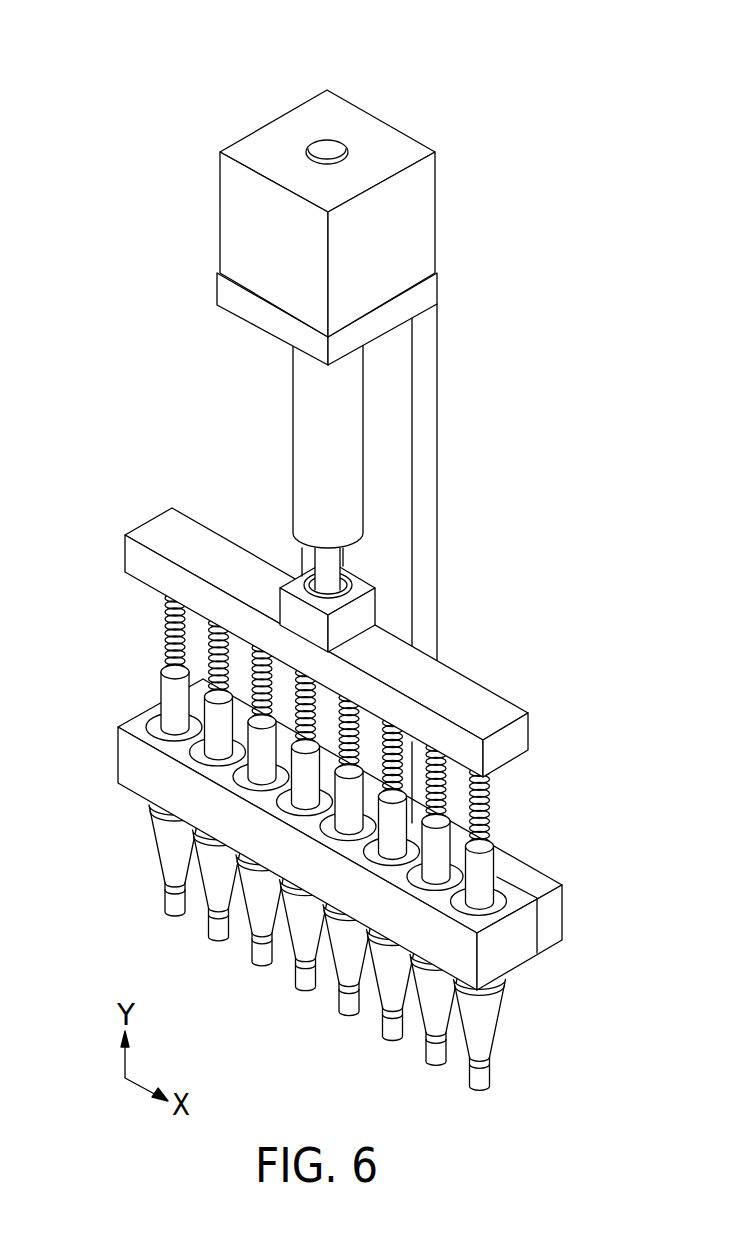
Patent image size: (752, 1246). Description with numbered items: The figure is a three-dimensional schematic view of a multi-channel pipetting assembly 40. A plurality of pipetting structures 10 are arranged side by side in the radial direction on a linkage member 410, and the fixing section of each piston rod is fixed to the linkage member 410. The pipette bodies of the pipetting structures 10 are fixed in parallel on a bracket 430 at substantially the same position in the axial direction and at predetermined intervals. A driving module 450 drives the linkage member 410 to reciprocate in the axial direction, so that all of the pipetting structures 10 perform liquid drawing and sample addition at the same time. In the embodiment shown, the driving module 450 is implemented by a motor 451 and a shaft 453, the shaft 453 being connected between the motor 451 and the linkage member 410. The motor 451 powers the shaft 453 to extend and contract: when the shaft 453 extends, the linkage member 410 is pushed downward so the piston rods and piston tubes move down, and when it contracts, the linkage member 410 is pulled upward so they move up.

The multi-channel pipetting assembly 40 is at (58, 78).
The pipetting structure 10 is at (162, 836).
The linkage member 410 is at (128, 560).
The bracket 430 is at (437, 386).
The driving module 450 is at (214, 413).
The motor 451 is at (247, 272).
The shaft 453 is at (302, 402).